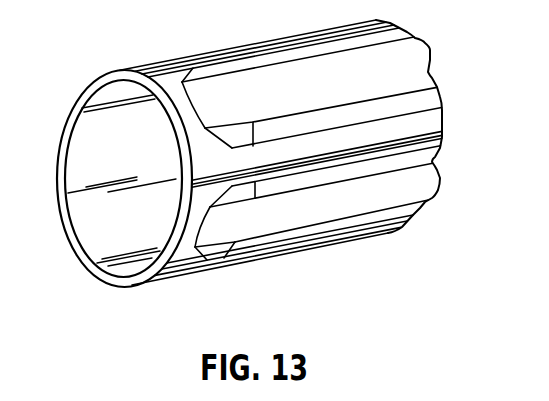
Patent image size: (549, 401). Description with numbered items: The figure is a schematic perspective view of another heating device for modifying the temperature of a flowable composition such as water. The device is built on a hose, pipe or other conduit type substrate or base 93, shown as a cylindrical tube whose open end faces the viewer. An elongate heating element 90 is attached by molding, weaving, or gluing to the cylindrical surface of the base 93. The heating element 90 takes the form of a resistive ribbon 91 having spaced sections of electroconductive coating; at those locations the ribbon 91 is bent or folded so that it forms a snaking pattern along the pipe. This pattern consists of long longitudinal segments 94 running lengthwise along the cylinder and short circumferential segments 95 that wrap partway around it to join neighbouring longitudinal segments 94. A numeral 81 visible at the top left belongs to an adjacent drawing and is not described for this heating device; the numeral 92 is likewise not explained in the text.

The element 81 is at (0, 33).
The heating element 90 is at (288, 245).
The resistive ribbon 91 is at (357, 232).
The lower key 92 is at (213, 230).
The substrate or base 93 is at (80, 157).
The long longitudinal segments 94 is at (425, 100).
The short circumferential segments 95 is at (200, 90).